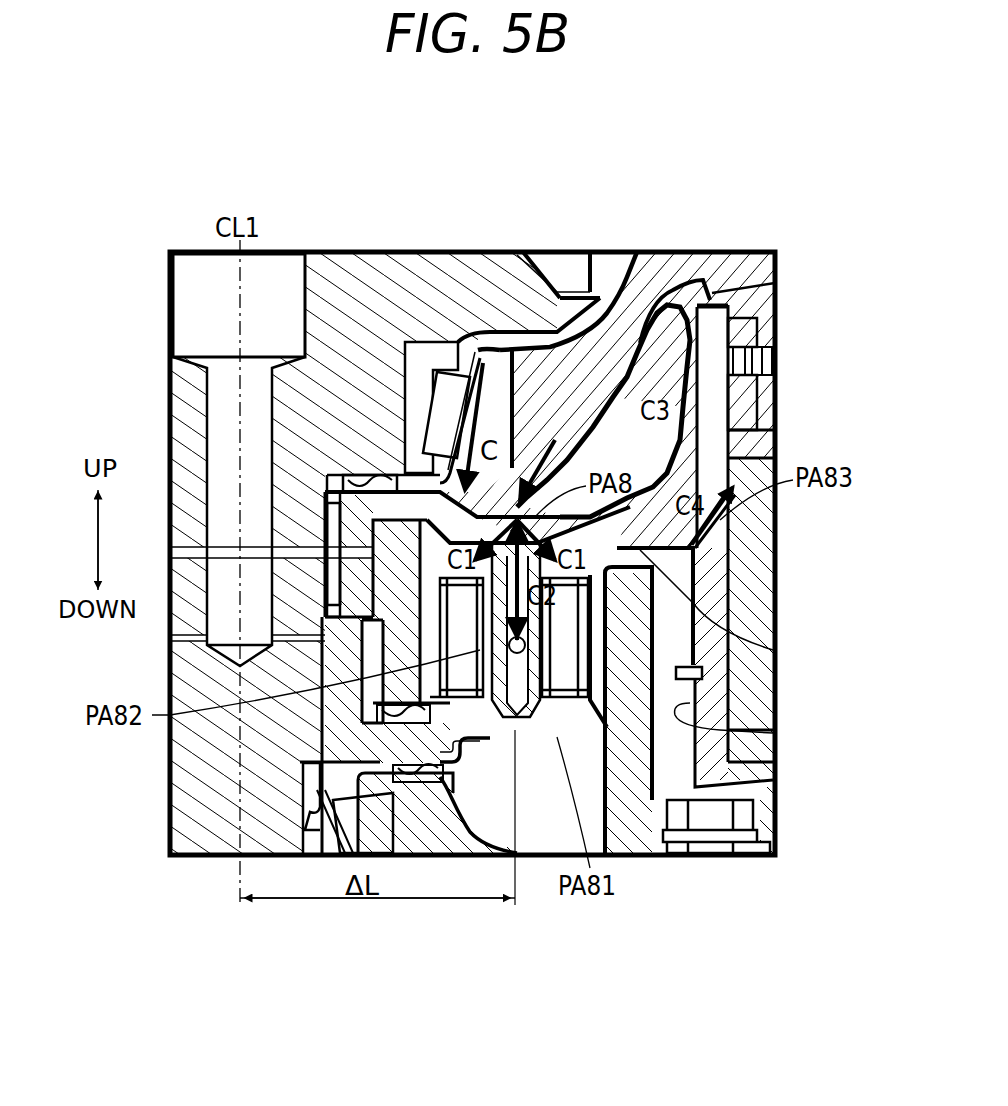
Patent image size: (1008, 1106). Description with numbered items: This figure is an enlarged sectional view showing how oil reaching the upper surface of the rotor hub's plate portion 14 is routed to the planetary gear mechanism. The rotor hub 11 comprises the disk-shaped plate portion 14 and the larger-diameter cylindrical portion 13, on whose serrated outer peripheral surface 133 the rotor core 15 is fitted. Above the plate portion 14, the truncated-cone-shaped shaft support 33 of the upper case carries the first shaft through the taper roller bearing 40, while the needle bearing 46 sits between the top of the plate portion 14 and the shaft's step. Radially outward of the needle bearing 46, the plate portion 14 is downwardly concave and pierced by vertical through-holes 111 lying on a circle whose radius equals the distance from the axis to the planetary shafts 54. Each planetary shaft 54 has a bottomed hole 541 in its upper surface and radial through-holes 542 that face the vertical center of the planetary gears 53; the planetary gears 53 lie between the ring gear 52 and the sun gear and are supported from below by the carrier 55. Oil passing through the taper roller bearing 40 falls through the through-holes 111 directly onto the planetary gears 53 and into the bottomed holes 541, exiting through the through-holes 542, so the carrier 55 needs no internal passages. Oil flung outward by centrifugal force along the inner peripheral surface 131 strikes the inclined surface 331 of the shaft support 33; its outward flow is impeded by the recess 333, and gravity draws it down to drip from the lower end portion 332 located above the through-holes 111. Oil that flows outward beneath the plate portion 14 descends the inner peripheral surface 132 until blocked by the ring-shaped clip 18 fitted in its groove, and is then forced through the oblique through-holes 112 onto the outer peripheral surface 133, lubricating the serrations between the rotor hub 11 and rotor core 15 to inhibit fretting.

The rotor hub 11 is at (715, 290).
The cylindrical portion 13 is at (728, 583).
The plate portion 14 is at (773, 650).
The rotor core 15 is at (753, 625).
The ring-shaped clip 18 is at (703, 673).
The shaft support 33 is at (613, 323).
The taper roller bearing 40 is at (445, 385).
The needle bearing 46 is at (372, 475).
The ring gear 52 is at (605, 720).
The planetary gears 53 is at (467, 690).
The planetary shafts 54 is at (480, 617).
The carrier 55 is at (426, 745).
The through-holes 111 is at (517, 500).
The through-holes 112 is at (700, 548).
The inner peripheral surface 131 is at (727, 420).
The inner peripheral surface 132 is at (773, 733).
The outer peripheral surface 133 is at (730, 525).
The inclined surface 331 is at (700, 385).
The lower end portion 332 is at (548, 490).
The recess 333 is at (727, 322).
The bottomed holes 541 is at (523, 713).
The through-holes 542 is at (502, 713).